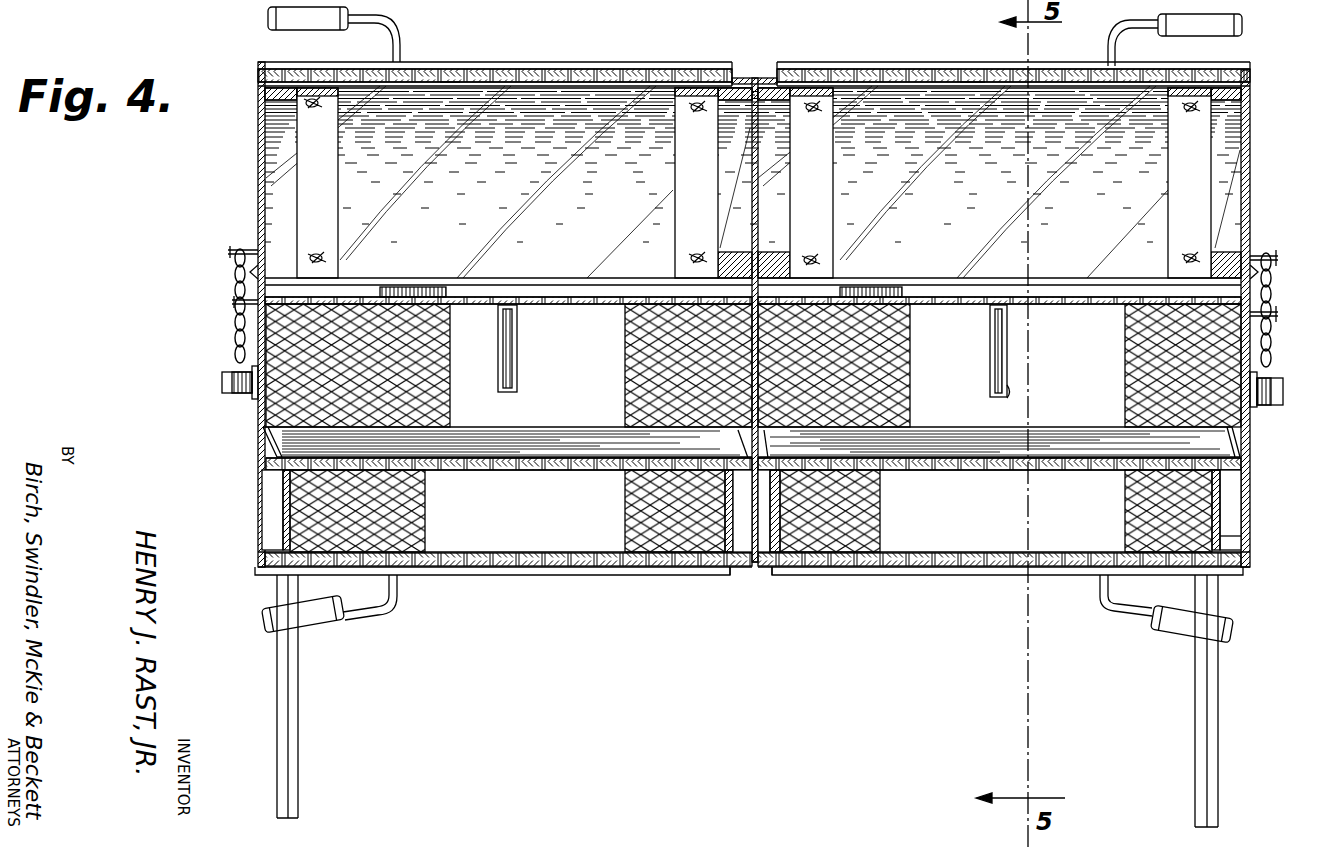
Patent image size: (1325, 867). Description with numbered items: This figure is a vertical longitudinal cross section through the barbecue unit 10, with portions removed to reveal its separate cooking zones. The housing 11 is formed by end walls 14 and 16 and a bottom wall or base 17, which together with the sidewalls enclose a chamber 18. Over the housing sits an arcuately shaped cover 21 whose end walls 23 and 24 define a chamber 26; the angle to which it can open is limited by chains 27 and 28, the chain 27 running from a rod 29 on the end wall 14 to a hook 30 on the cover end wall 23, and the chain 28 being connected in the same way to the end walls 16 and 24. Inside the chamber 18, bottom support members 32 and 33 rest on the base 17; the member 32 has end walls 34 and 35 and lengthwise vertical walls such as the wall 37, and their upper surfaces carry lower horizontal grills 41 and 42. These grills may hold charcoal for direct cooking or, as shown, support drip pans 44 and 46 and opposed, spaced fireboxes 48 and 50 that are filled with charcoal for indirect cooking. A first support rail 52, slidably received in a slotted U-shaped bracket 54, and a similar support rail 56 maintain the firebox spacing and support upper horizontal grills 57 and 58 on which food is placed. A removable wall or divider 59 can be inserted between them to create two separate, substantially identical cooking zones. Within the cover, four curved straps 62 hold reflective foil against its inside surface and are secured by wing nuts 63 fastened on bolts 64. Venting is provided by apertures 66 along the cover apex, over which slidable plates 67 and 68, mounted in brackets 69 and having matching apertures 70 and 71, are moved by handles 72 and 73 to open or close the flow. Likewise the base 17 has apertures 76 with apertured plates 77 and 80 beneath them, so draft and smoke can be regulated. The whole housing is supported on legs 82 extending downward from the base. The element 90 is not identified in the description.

The barbecue unit 10 is at (756, 62).
The housing 11 is at (256, 432).
The end wall 14 is at (1246, 513).
The end wall 16 is at (258, 492).
The bottom wall or base 17 is at (744, 576).
The chamber 18 is at (598, 340).
The cover 21 is at (766, 78).
The end wall of cover 23 is at (1251, 170).
The end wall of cover 24 is at (258, 184).
The chamber of cover 26 is at (754, 53).
The chain 27 is at (1274, 356).
The chain 28 is at (234, 334).
The rod 29 is at (1278, 316).
The hook 30 is at (1278, 262).
The bottom support member 32 is at (1222, 500).
The bottom support member 33 is at (283, 528).
The end wall of support member 34 is at (1241, 538).
The end wall of support member 35 is at (796, 576).
The lengthwise vertical wall 37 is at (958, 576).
The lower horizontal grill 41 is at (994, 478).
The lower horizontal grill 42 is at (556, 478).
The drip pan 44 is at (905, 448).
The drip pan 46 is at (608, 442).
The firebox 48 is at (1072, 330).
The firebox 50 is at (462, 300).
The first support rail 52 is at (990, 353).
The slotted U-shaped bracket 54 is at (1008, 392).
The support rail 56 is at (517, 363).
The upper horizontal grill 57 is at (946, 298).
The upper horizontal grill 58 is at (382, 298).
The removable wall or divider 59 is at (760, 164).
The curved strap 62 is at (330, 176).
The wing nut 63 is at (690, 107).
The bolt 64 is at (692, 112).
The apertures 66 is at (443, 84).
The slidable plate 67 is at (452, 70).
The slidable plate 68 is at (878, 70).
The brackets 69 is at (513, 70).
The apertures of plate 70 is at (626, 70).
The apertures of plate 71 is at (982, 70).
The handle 72 is at (268, 14).
The handle 73 is at (1242, 26).
The apertures 76 is at (573, 552).
The apertured plate 77 is at (1004, 576).
The apertured plate 80 is at (520, 576).
The leg 82 is at (290, 700).
The latch 90 is at (222, 382).